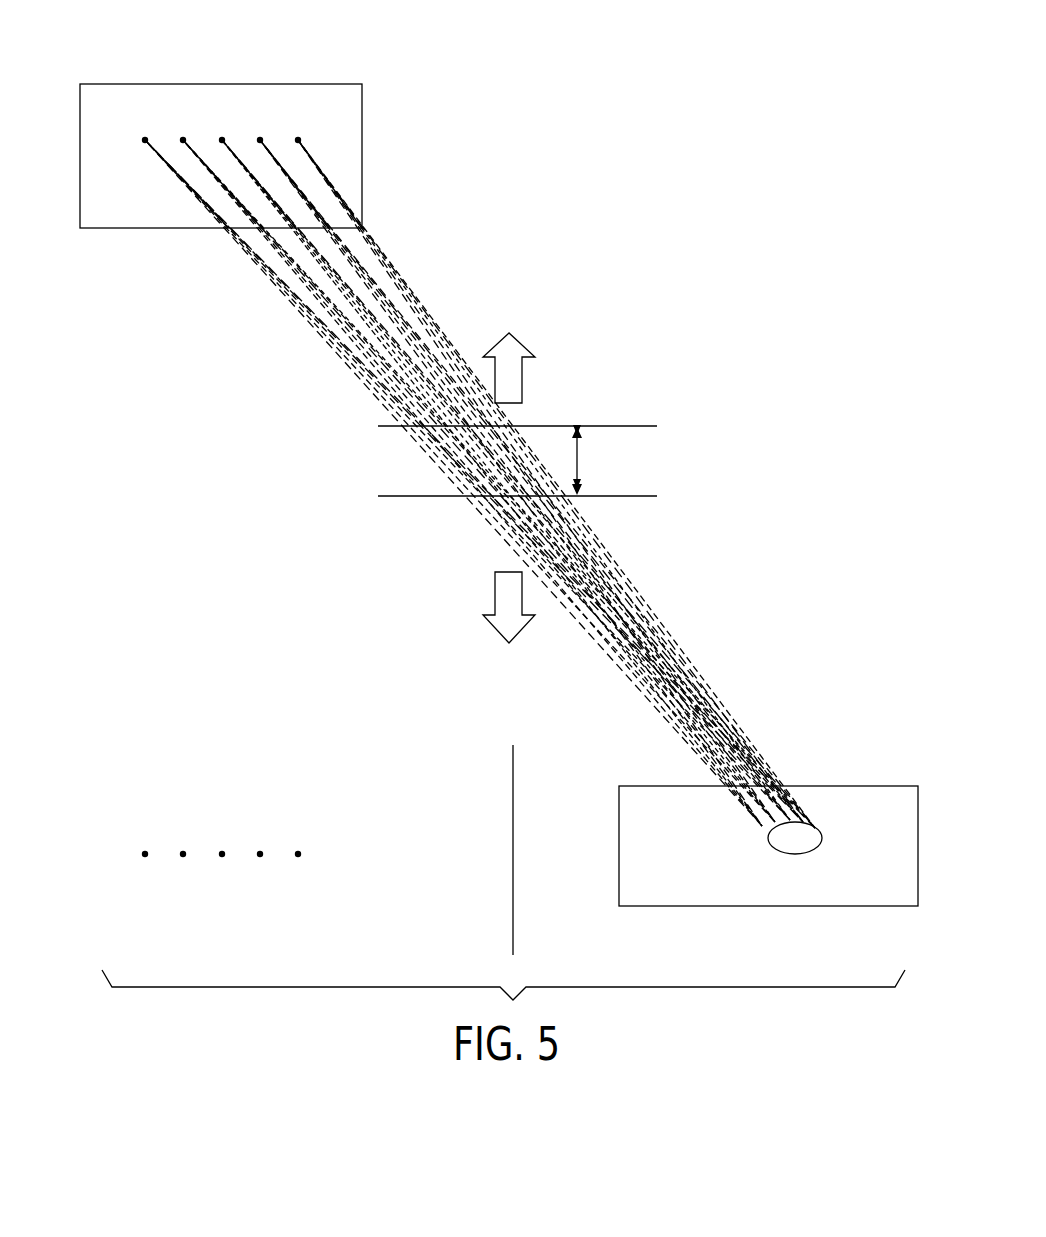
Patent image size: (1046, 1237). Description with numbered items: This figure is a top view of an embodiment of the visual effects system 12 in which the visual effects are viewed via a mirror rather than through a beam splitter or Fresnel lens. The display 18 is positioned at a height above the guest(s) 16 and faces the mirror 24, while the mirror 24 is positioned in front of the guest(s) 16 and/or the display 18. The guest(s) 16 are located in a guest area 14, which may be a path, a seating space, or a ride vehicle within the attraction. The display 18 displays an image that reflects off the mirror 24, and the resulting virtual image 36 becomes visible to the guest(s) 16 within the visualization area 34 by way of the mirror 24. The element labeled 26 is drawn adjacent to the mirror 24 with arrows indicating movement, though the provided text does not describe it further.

The visual effects system 12 is at (428, 43).
The guest area 14 is at (619, 848).
The guest(s) 16 is at (770, 851).
The display 18 is at (300, 852).
The mirror 24 is at (398, 462).
The mirror actuator movement 26 is at (367, 417).
The visualization area 34 is at (364, 187).
The virtual image 36 is at (144, 141).